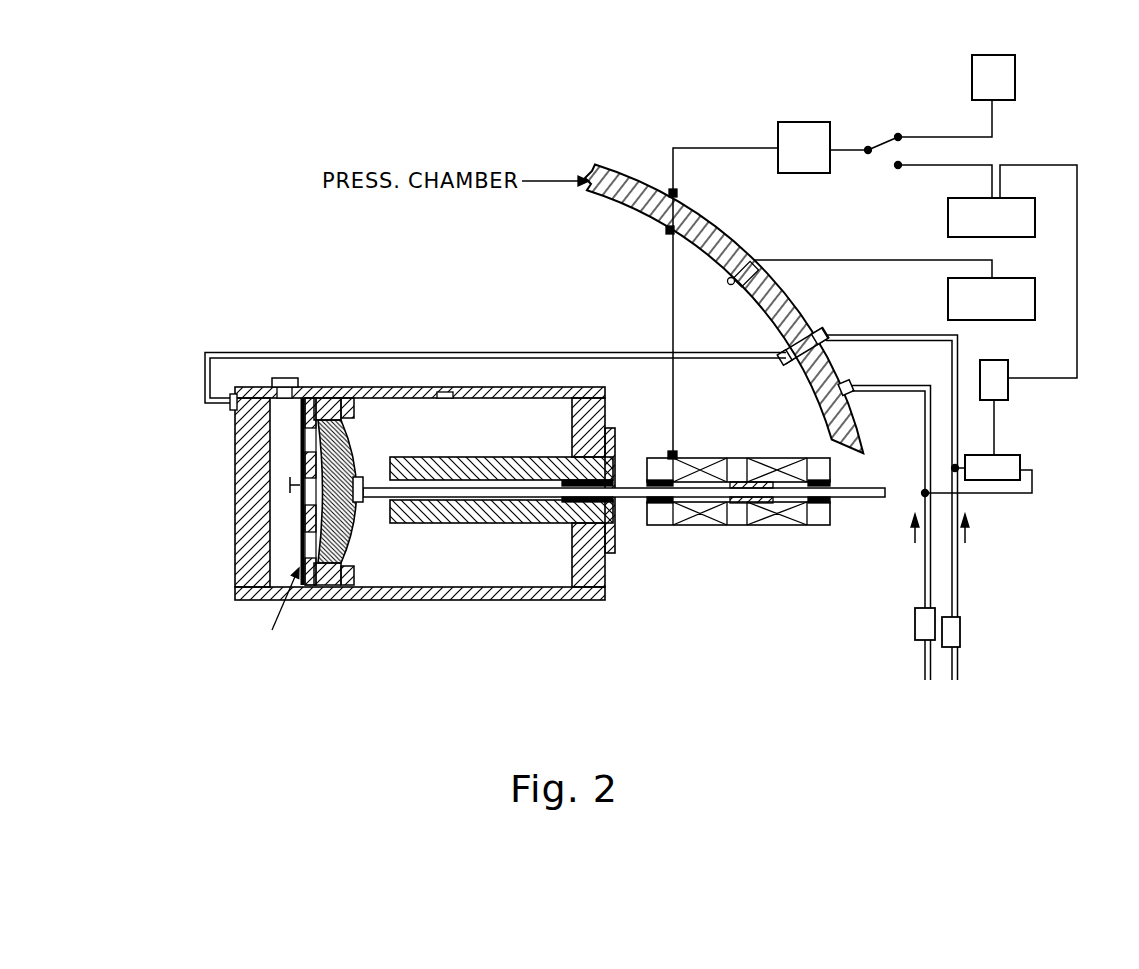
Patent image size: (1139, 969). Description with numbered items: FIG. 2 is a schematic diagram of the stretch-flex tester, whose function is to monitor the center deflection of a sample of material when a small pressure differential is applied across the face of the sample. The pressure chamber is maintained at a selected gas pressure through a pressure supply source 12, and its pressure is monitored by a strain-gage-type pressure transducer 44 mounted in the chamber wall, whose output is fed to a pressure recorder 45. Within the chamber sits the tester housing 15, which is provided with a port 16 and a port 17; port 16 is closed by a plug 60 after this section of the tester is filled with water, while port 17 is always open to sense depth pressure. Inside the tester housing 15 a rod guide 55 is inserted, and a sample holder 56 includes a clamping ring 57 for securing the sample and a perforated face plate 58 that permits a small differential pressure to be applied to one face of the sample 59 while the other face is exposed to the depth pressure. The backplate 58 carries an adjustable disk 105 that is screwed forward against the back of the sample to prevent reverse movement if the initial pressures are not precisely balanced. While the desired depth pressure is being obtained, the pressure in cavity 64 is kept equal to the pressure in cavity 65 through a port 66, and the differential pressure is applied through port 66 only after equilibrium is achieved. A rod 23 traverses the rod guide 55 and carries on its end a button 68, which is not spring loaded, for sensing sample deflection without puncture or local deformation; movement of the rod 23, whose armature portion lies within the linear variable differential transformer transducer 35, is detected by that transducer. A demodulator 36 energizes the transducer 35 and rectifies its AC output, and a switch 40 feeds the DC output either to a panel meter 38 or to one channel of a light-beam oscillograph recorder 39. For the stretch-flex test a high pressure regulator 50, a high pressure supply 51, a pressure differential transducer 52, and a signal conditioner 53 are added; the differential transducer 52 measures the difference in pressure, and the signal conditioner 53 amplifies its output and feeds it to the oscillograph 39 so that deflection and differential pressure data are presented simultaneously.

The pressure supply source 12 is at (918, 625).
The tester housing 15 is at (347, 600).
The port 16 is at (313, 391).
The port 17 is at (455, 388).
The rod 23 is at (628, 493).
The linear variable differential transformer transducer 35 is at (702, 460).
The demodulator 36 is at (797, 133).
The panel meter 38 is at (1005, 78).
The light-beam oscillograph recorder 39 is at (1022, 218).
The switch 40 is at (898, 135).
The strain-gage-type pressure transducer 44 is at (728, 284).
The pressure recorder 45 is at (1010, 290).
The high pressure regulator 50 is at (955, 625).
The high pressure supply 51 is at (955, 568).
The pressure differential transducer 52 is at (1000, 468).
The signal conditioner 53 is at (1000, 388).
The rod guide 55 is at (525, 520).
The sample holder 56 is at (275, 611).
The clamping ring 57 is at (389, 596).
The perforated face plate 58 is at (300, 520).
The sample 59 is at (348, 540).
The plug 60 is at (283, 378).
The cavity 64 is at (282, 473).
The cavity 65 is at (530, 415).
The port 66 is at (233, 394).
The button 68 is at (358, 478).
The adjustable disk 105 is at (354, 575).